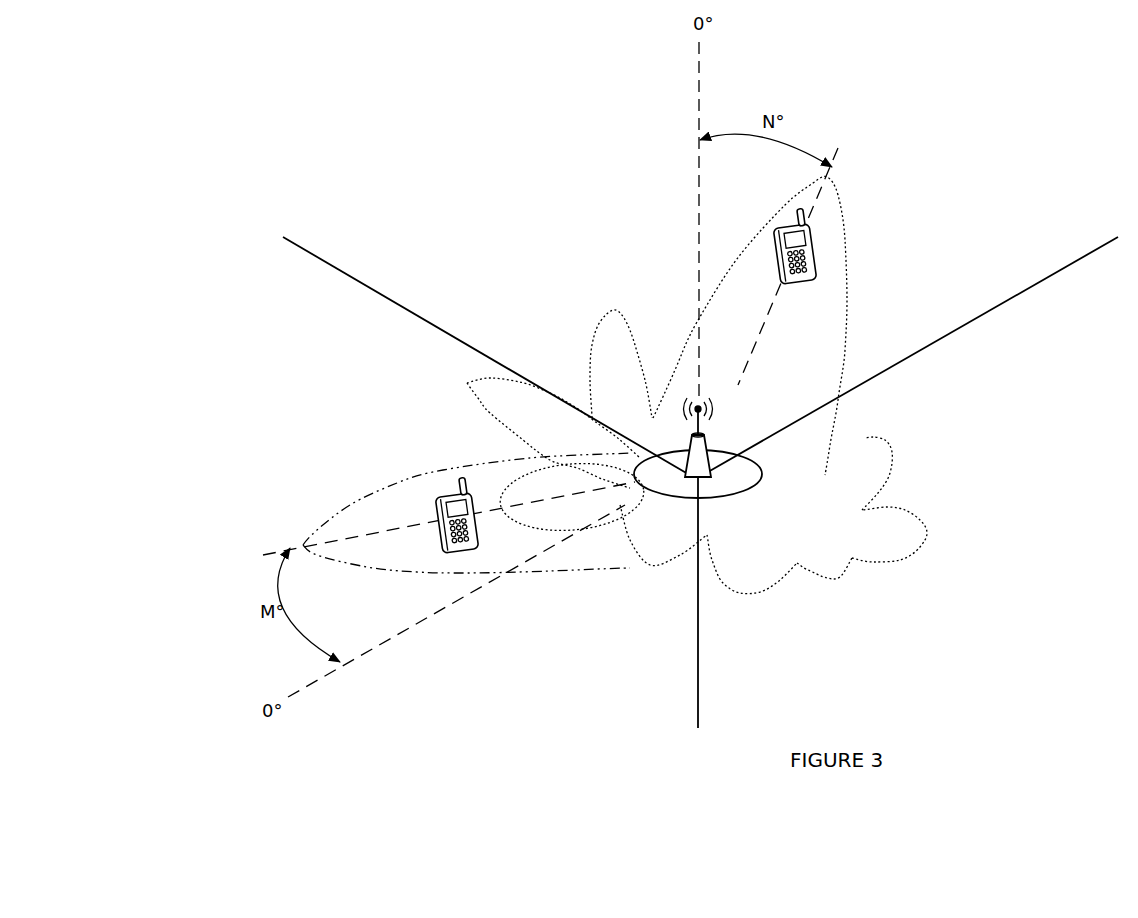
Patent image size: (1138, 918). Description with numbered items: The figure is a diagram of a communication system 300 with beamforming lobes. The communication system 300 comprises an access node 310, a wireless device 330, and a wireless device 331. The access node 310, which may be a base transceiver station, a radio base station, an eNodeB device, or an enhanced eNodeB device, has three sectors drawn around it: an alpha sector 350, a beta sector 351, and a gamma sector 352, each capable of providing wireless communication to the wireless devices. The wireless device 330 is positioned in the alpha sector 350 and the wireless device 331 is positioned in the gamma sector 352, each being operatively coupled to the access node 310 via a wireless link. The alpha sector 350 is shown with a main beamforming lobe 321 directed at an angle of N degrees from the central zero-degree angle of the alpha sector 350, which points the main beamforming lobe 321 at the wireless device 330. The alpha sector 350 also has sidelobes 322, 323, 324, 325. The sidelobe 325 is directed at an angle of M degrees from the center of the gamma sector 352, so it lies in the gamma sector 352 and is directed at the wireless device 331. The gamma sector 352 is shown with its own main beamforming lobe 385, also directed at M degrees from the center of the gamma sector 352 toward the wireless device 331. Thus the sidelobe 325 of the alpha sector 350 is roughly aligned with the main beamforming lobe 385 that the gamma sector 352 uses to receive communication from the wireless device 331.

The communication system 300 is at (221, 63).
The access node 310 is at (722, 492).
The main beamforming lobe 321 is at (838, 200).
The sidelobe 322 is at (865, 438).
The sidelobe 323 is at (613, 310).
The sidelobe 324 is at (470, 382).
The sidelobe 325 is at (505, 492).
The wireless device 330 is at (808, 277).
The wireless device 331 is at (480, 532).
The alpha sector 350 is at (485, 316).
The beta sector 351 is at (913, 354).
The gamma sector 352 is at (617, 602).
The main beamforming lobe 385 is at (378, 492).